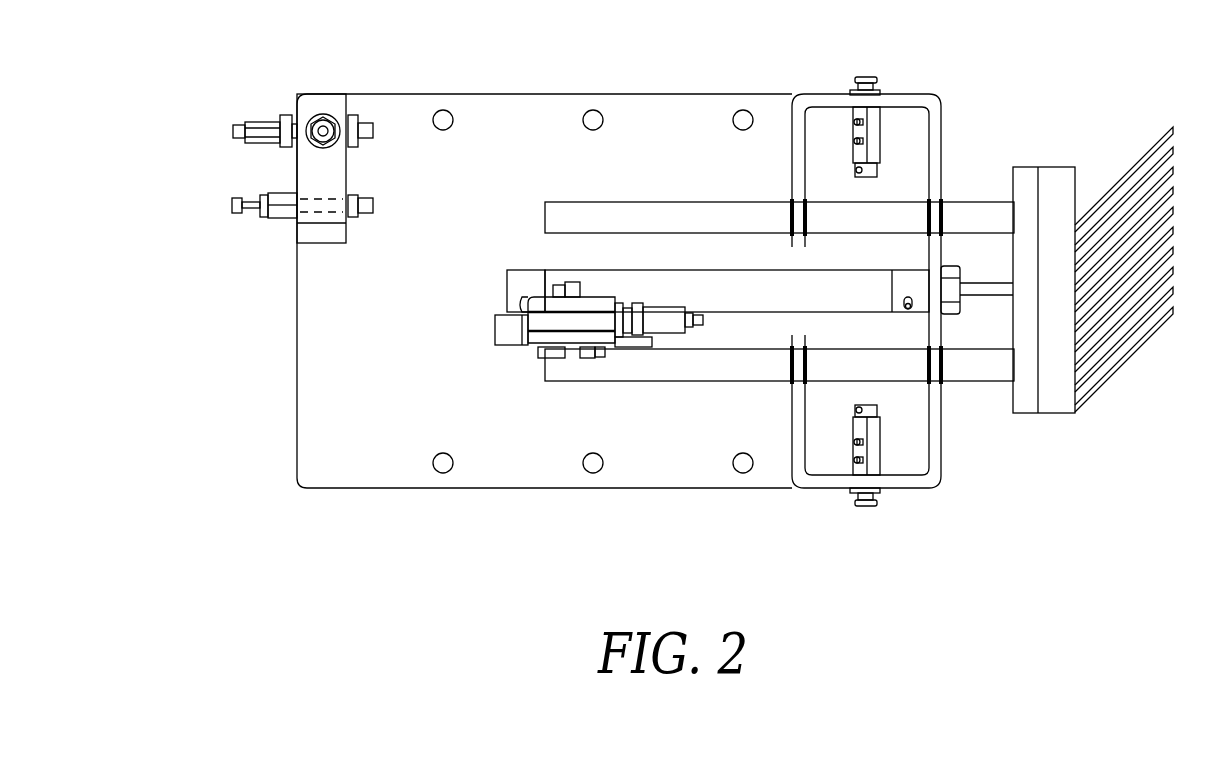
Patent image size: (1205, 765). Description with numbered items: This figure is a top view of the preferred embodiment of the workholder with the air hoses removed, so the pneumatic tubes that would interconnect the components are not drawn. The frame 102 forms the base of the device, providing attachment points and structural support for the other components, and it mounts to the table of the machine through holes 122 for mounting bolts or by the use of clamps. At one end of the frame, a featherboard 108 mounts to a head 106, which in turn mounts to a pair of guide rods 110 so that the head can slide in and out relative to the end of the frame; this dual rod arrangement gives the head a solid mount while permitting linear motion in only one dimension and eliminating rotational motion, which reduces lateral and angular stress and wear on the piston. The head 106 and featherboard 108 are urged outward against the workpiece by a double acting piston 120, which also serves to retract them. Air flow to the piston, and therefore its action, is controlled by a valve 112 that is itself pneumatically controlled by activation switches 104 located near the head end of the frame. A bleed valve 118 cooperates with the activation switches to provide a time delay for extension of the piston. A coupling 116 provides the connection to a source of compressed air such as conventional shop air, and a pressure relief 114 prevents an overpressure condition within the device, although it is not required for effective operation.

The frame 102 is at (295, 370).
The activation switches 104 is at (857, 74).
The head 106 is at (1032, 163).
The featherboard 108 is at (1066, 414).
The guide rods 110 is at (963, 197).
The valve 112 is at (530, 353).
The pressure relief 114 is at (311, 114).
The coupling 116 is at (267, 113).
The bleed valve 118 is at (276, 220).
The double acting piston 120 is at (522, 268).
The holes 122 is at (439, 110).